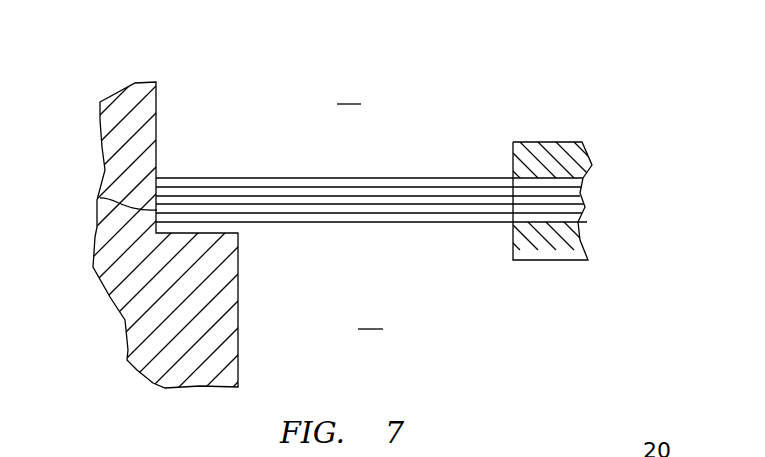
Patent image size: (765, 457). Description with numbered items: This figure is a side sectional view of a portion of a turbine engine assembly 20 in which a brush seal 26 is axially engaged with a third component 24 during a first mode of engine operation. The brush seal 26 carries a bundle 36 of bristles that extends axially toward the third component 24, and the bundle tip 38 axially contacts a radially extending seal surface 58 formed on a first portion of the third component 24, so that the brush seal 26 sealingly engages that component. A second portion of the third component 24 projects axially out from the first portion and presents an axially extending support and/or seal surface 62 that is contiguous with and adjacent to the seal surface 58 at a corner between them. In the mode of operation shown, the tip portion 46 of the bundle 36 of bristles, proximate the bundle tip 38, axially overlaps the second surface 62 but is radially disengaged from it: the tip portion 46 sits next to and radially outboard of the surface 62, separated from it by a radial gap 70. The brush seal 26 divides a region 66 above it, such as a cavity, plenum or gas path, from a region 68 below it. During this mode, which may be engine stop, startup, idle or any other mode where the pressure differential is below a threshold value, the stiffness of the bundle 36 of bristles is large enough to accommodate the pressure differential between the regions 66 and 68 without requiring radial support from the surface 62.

The assembly 20 is at (607, 69).
The third component 24 is at (98, 298).
The brush seal 26 is at (549, 120).
The bundle of bristles 36 is at (408, 172).
The bundle tip 38 is at (100, 198).
The tip portion 46 is at (219, 168).
The seal surface 58 is at (157, 130).
The support and/or seal surface 62 is at (223, 230).
The region 66 is at (351, 92).
The region 68 is at (372, 317).
The radial gap 70 is at (188, 226).